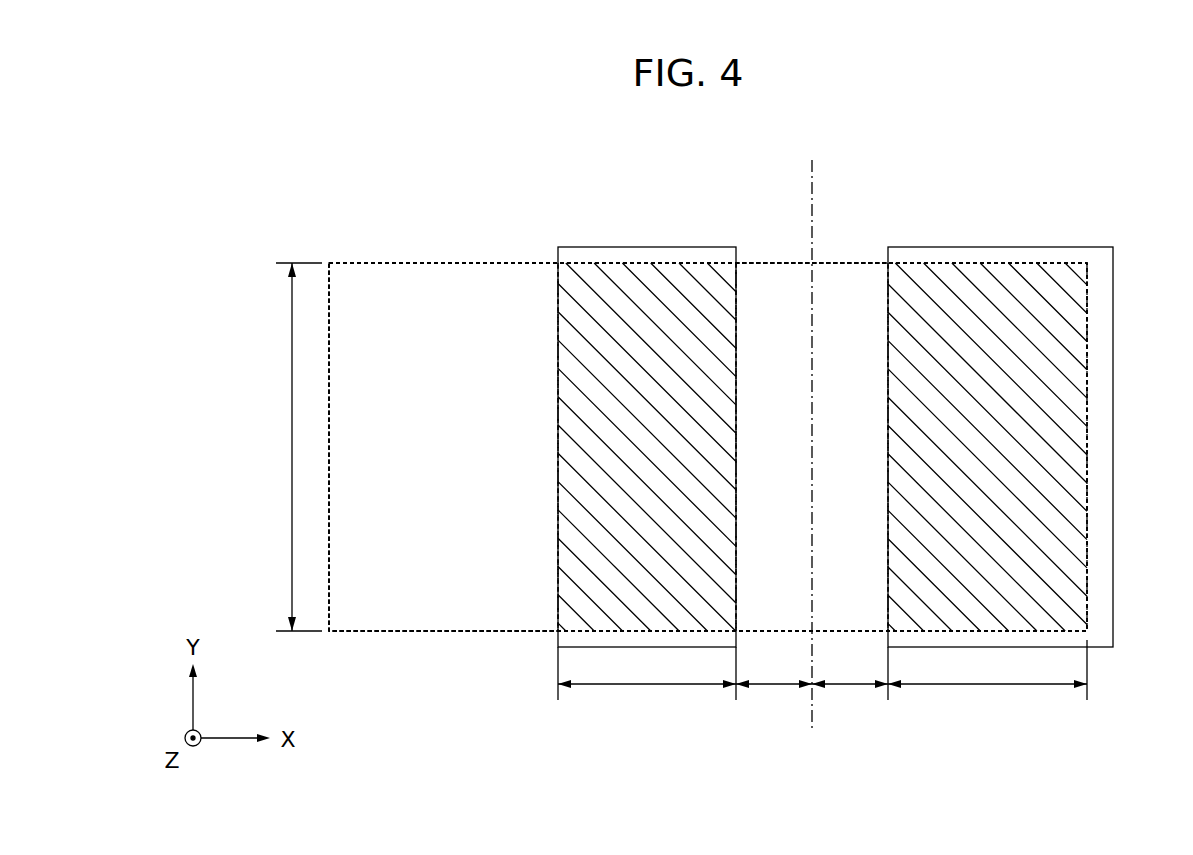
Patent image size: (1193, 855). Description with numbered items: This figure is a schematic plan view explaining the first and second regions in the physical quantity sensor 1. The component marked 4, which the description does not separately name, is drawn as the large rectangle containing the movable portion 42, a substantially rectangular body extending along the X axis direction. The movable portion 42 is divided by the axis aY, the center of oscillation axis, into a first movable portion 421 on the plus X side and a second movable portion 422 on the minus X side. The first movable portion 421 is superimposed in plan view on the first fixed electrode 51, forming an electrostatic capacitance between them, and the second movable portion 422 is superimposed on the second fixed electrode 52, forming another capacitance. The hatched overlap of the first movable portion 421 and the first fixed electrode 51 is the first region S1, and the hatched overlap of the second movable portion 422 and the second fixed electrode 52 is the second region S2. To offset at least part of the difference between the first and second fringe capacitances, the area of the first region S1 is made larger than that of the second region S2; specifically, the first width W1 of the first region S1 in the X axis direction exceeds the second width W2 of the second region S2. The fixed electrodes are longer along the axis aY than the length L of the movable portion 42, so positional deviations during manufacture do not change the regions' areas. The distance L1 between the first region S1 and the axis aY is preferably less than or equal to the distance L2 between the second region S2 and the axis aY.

The physical quantity sensor 1 is at (1078, 136).
The substrate 4 is at (392, 250).
The movable portion 42 is at (708, 447).
The first movable portion 421 is at (848, 283).
The second movable portion 422 is at (497, 285).
The first fixed electrode 51 is at (1010, 255).
The second fixed electrode 52 is at (648, 256).
The first region S1 is at (1032, 411).
The second region S2 is at (572, 393).
The axis aY is at (812, 178).
The first width W1 is at (987, 679).
The second width W2 is at (647, 682).
The length between first region and axis L1 is at (850, 699).
The length between second region and axis L2 is at (774, 699).
The length of movable portion L is at (259, 447).